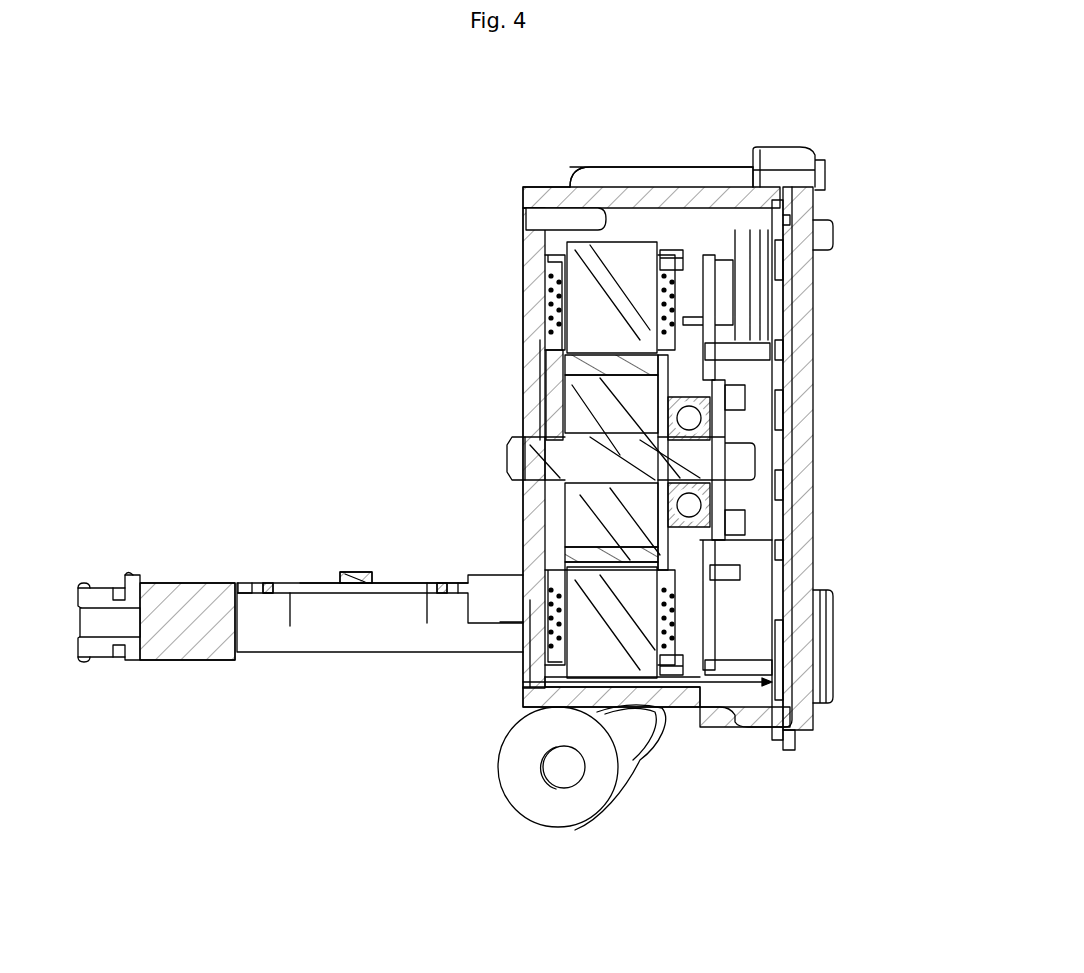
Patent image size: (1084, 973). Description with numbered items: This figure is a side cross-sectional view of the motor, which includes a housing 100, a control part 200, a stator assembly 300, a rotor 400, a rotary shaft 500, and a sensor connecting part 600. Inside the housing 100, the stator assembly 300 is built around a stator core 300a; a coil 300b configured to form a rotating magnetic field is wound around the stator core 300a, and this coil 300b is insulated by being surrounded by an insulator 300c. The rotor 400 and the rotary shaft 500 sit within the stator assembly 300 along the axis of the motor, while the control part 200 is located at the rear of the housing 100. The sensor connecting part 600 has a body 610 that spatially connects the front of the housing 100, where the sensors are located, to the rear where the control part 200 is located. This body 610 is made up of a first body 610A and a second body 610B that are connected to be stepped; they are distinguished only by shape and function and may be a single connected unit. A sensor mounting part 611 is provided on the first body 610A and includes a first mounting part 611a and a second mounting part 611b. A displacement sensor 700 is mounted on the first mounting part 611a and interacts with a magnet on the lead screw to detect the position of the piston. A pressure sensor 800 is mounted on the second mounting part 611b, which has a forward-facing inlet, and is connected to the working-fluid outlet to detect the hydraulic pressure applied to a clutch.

The housing 100 is at (505, 289).
The control part 200 is at (836, 374).
The stator assembly 300 is at (566, 369).
The stator core 300a is at (621, 297).
The coil 300b is at (549, 256).
The insulator 300c is at (563, 330).
The rotor 400 is at (588, 410).
The rotary shaft 500 is at (490, 452).
The sensor connecting part 600 is at (424, 673).
The body 610 is at (562, 780).
The first body 610A is at (463, 640).
The second body 610B is at (630, 688).
The sensor mounting part 611 is at (370, 672).
The first mounting part 611a is at (347, 597).
The second mounting part 611b is at (243, 630).
The displacement sensor 700 is at (358, 560).
The pressure sensor 800 is at (168, 674).